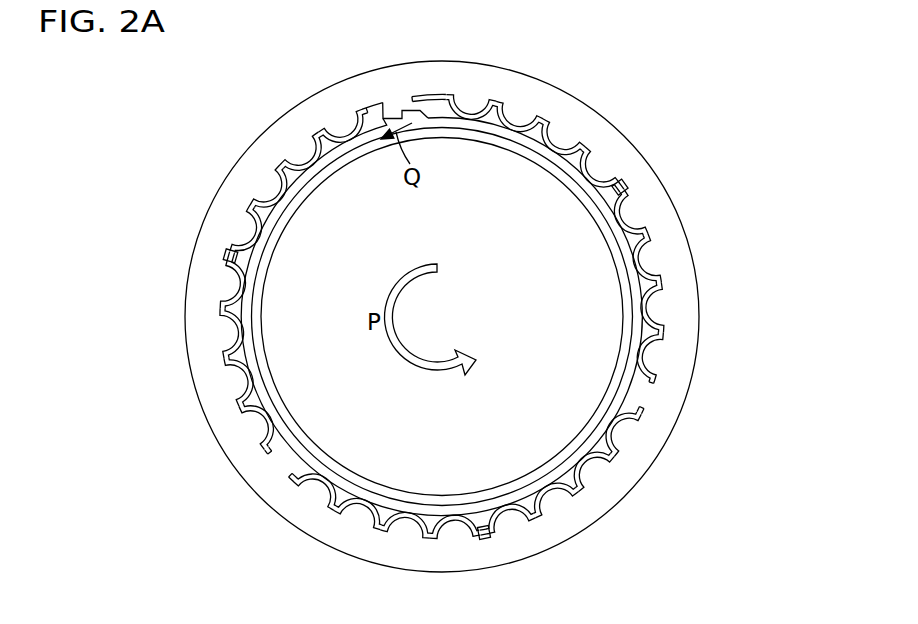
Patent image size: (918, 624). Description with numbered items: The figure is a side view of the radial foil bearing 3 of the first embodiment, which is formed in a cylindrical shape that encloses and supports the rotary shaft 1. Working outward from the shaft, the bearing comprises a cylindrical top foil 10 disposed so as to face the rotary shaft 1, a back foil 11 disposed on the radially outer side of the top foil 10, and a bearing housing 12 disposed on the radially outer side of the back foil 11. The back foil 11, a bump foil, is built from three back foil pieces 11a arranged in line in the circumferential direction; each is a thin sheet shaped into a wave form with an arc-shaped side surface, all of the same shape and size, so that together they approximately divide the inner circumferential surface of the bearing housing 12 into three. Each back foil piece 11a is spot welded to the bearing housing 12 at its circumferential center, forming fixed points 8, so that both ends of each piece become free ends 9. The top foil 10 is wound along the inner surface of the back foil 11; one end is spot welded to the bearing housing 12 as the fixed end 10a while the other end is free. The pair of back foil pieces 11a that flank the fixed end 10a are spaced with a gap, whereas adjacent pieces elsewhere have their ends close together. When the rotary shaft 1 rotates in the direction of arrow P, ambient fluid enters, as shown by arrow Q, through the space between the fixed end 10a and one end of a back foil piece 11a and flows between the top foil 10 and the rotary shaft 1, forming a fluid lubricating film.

The rotary shaft 1 is at (560, 400).
The radial foil bearing 3 is at (697, 197).
The fixed points 8 is at (625, 180).
The free ends 9 is at (367, 108).
The top foil 10 is at (494, 262).
The fixed end 10a is at (402, 108).
The back foil 11 is at (468, 348).
The back foil pieces 11a is at (227, 327).
The bearing housing 12 is at (680, 357).